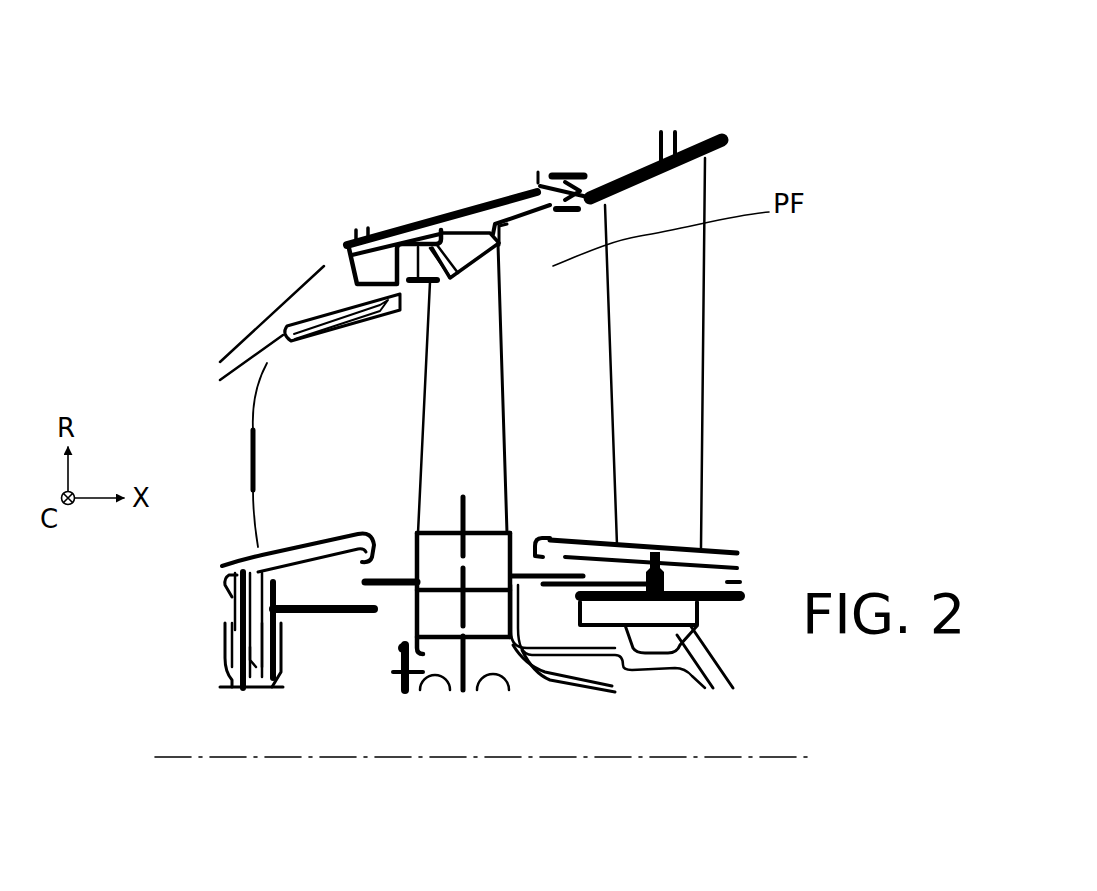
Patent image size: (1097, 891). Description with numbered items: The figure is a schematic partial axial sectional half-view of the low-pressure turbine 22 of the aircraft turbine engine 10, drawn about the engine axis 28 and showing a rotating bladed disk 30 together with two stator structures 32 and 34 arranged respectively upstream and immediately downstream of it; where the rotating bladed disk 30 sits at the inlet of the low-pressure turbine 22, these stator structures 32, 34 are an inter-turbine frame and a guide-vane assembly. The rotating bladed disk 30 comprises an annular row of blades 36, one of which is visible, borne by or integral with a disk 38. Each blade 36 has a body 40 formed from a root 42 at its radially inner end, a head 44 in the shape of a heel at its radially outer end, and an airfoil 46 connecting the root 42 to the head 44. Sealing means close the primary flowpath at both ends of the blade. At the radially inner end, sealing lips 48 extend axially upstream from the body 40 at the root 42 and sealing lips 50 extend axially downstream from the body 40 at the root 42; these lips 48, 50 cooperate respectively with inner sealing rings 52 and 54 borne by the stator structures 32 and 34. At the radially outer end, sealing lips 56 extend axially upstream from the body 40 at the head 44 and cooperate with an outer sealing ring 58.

The aircraft turbine engine 10 is at (498, 394).
The low-pressure turbine 22 is at (410, 127).
The longitudinal axis 28 is at (765, 755).
The rotating bladed disk 30 is at (388, 435).
The stator structure 32 is at (259, 452).
The stator structure 34 is at (710, 287).
The blade 36 is at (552, 388).
The disk 38 is at (477, 647).
The body 40 is at (787, 307).
The root 42 is at (483, 613).
The head 44 is at (470, 258).
The airfoil 46 is at (485, 388).
The sealing lips 48 is at (391, 618).
The sealing lips 50 is at (534, 588).
The inner sealing ring 52 is at (313, 612).
The inner sealing ring 54 is at (556, 592).
The sealing lips 56 is at (422, 280).
The outer sealing ring 58 is at (372, 267).